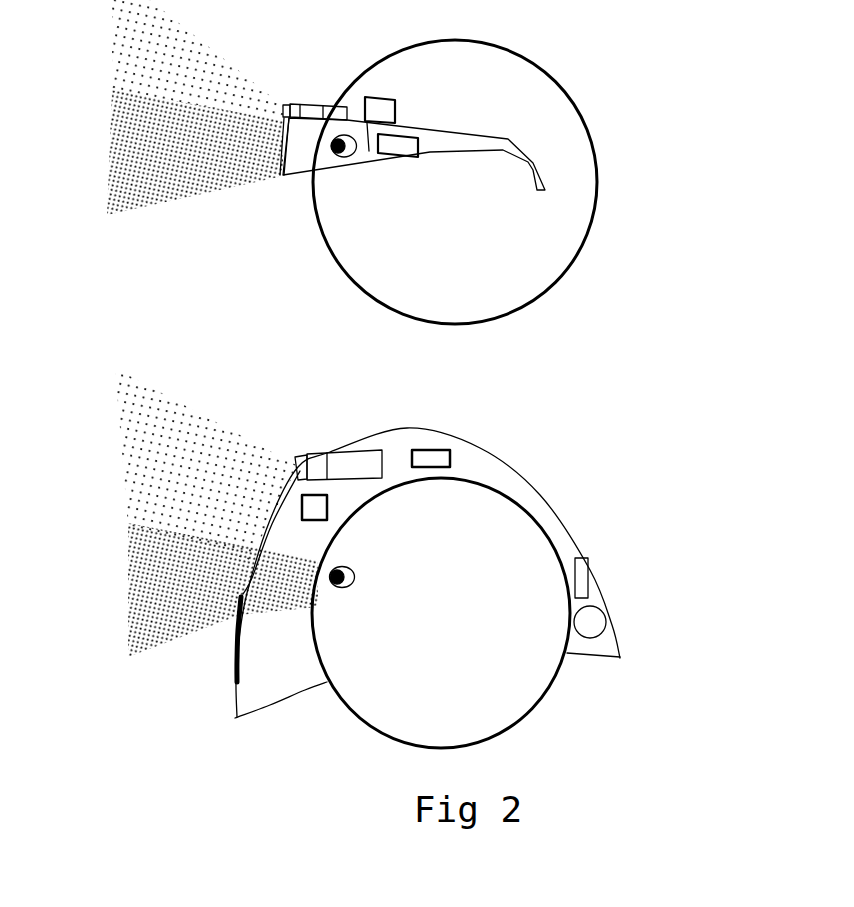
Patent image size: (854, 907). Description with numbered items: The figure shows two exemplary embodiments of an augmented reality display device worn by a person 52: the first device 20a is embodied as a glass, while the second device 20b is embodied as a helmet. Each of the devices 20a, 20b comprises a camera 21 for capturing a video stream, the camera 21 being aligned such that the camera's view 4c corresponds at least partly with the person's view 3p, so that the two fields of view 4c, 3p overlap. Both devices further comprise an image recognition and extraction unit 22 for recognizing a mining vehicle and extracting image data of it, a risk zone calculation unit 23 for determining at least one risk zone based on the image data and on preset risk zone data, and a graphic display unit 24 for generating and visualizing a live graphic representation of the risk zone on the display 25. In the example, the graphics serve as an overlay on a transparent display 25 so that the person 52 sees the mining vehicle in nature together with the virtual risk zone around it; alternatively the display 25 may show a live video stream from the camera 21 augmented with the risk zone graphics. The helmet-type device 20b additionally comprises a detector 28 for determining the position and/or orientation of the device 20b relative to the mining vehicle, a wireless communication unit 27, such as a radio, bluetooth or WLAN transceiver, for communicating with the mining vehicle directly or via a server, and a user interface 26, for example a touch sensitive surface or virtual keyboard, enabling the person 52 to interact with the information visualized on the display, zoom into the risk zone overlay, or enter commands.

The augmented reality display device 20a is at (363, 240).
The augmented reality display device 20b is at (364, 543).
The camera 21 is at (317, 463).
The image recognition and extraction unit 22 is at (367, 457).
The risk zone calculation unit 23 is at (430, 457).
The graphic display unit 24 is at (385, 110).
The display 25 is at (282, 176).
The user interface 26 is at (232, 653).
The wireless communication unit 27 is at (577, 583).
The detector 28 is at (588, 630).
The person's view 3p is at (150, 152).
The camera's view 4c is at (183, 97).
The person 52 is at (549, 327).